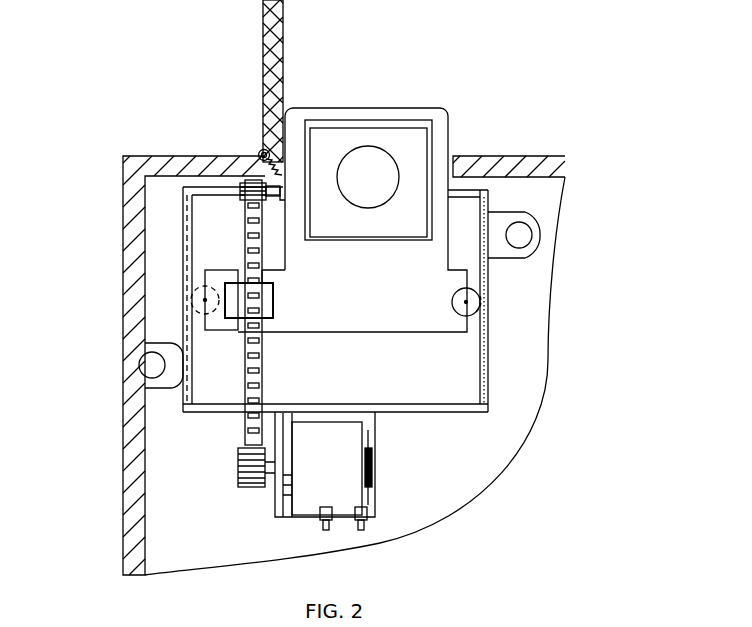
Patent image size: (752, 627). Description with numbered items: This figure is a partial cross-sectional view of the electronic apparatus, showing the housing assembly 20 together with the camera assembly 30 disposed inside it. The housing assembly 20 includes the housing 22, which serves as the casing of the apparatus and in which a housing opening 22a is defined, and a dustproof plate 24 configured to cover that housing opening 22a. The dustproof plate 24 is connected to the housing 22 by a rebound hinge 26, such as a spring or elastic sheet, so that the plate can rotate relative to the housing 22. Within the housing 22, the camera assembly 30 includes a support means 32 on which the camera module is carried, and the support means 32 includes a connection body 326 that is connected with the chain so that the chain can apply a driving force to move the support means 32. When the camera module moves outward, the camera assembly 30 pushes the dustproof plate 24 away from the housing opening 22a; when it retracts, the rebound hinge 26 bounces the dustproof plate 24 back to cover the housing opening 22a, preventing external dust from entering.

The housing assembly 20 is at (170, 64).
The housing 22 is at (188, 156).
The dustproof plate 24 is at (263, 67).
The housing opening 22a is at (456, 160).
The rebound hinge 26 is at (278, 166).
The camera assembly 30 is at (463, 356).
The support means 32 is at (423, 313).
The connection body 326 is at (240, 308).